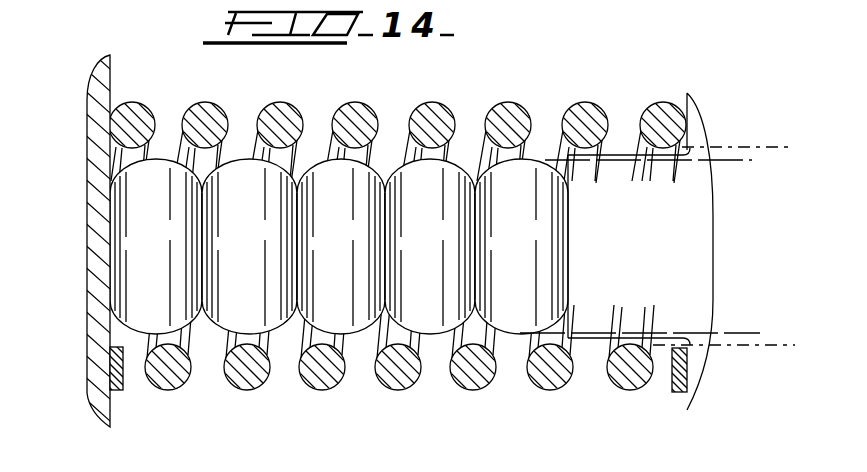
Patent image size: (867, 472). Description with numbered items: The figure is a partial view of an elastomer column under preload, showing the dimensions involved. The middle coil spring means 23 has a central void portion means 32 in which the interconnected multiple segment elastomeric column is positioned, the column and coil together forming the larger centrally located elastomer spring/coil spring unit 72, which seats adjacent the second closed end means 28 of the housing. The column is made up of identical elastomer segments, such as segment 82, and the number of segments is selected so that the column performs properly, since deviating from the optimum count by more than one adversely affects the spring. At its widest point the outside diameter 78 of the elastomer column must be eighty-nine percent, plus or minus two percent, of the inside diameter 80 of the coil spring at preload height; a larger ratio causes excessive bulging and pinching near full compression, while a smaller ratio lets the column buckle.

The middle coil spring means 23 is at (184, 383).
The second closed end means 28 is at (87, 338).
The central void portion means 32 is at (292, 318).
The elastomer spring/coil spring unit 72 is at (432, 370).
The outside diameter of the elastomer column 78 is at (627, 322).
The inside diameter of the coil spring 80 is at (772, 335).
The elastomer segment 82 is at (520, 340).